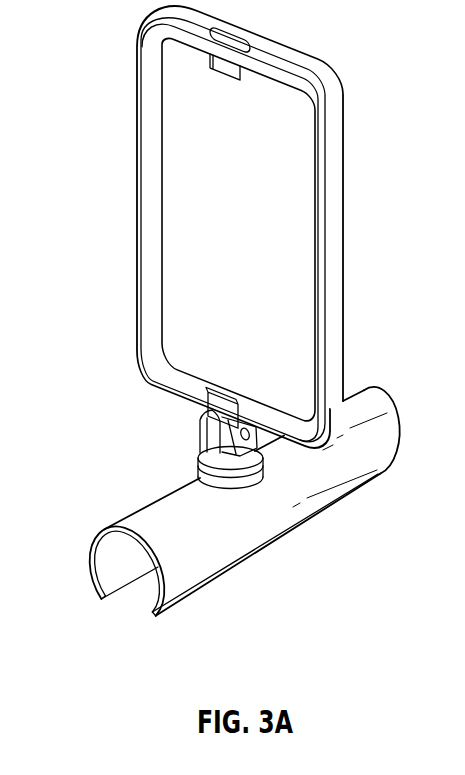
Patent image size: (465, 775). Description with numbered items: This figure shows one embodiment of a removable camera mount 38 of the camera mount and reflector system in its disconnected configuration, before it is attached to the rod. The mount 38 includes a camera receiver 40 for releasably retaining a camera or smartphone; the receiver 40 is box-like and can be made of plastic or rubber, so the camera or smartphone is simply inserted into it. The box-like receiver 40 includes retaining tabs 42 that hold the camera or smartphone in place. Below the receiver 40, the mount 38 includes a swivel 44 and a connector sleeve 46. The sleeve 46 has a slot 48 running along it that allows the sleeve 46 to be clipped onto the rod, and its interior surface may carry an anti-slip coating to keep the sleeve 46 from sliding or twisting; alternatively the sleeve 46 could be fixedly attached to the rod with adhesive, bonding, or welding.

The removable camera mount 38 is at (111, 85).
The camera receiver 40 is at (287, 50).
The retaining tab 42 is at (233, 77).
The swivel 44 is at (200, 436).
The connector sleeve 46 is at (262, 532).
The slot 48 is at (113, 603).